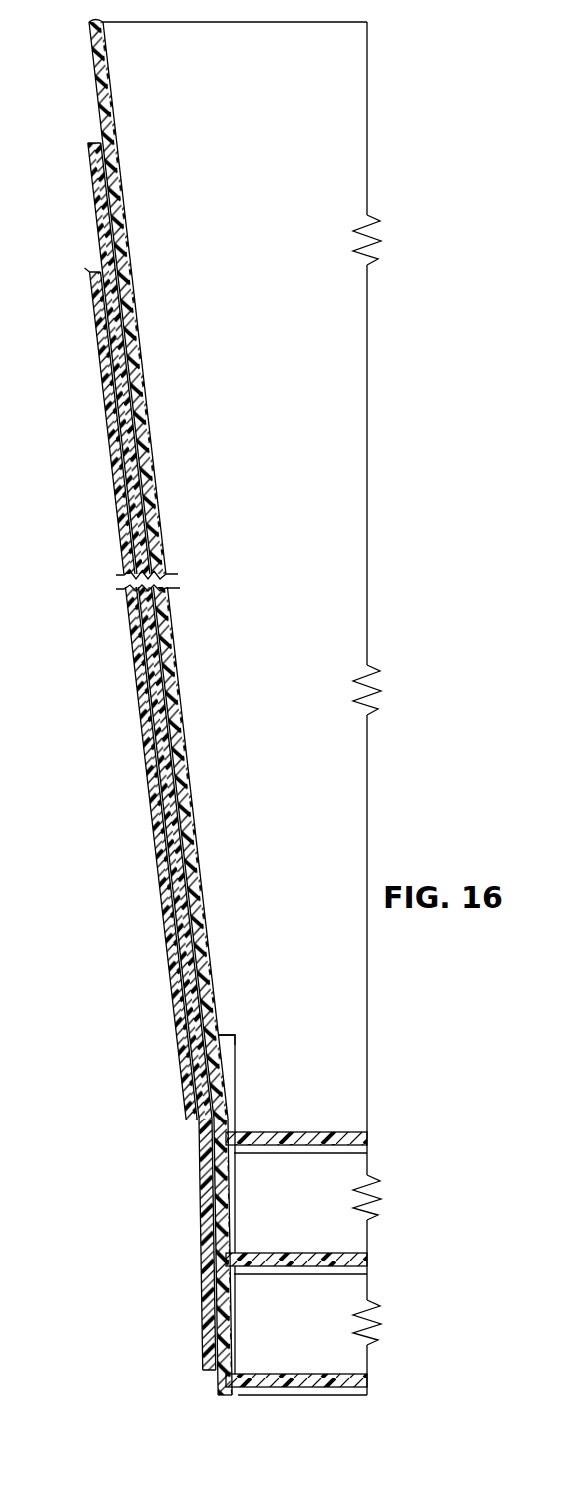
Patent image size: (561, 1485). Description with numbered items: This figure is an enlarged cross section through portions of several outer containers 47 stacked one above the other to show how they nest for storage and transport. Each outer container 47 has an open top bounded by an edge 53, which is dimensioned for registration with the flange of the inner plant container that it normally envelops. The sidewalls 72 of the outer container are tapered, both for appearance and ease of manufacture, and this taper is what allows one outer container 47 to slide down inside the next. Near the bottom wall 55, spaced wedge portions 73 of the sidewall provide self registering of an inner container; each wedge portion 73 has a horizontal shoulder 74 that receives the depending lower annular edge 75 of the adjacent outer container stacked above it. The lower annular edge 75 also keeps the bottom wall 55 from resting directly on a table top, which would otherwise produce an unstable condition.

The edge 53 is at (97, 21).
The outer container 47 is at (131, 708).
The wall of the outer container 72 is at (103, 82).
The bottom wall 55 is at (308, 1134).
The wedge portions 73 is at (238, 1050).
The horizontal shoulder 74 is at (232, 1035).
The lower annular edge 75 is at (224, 1394).